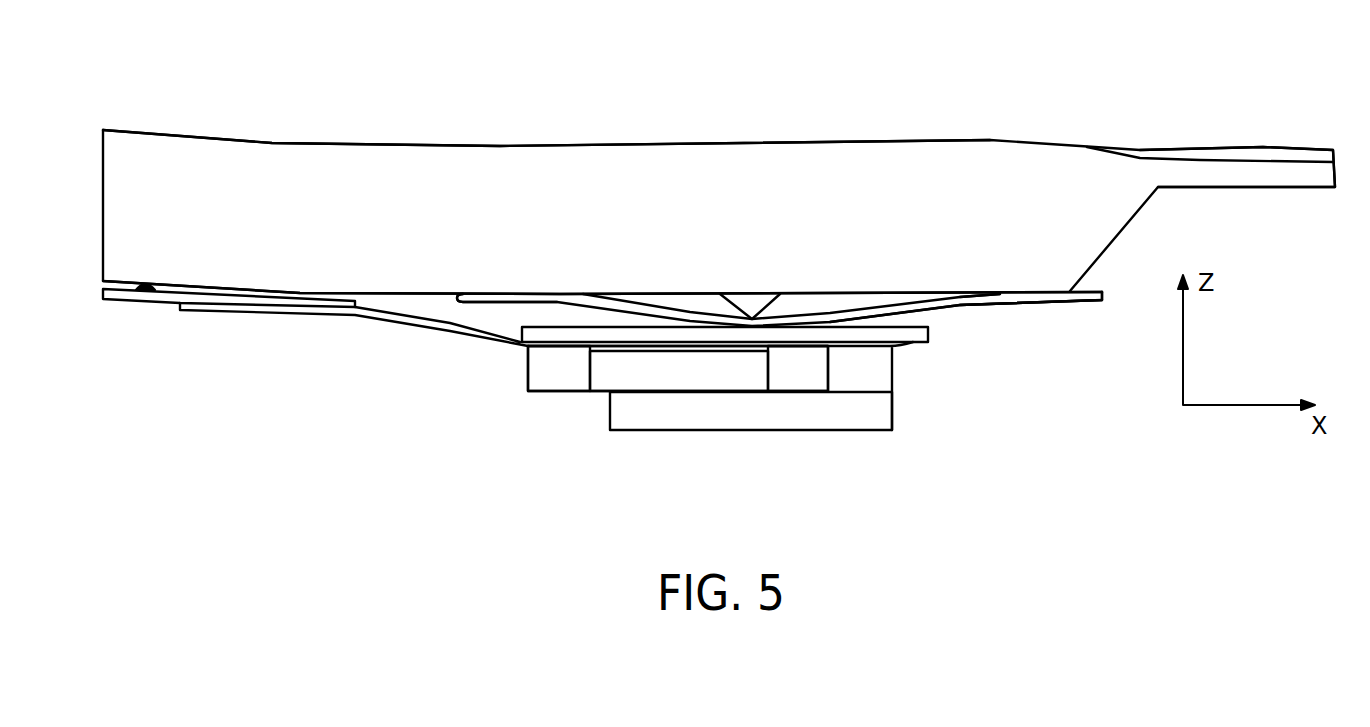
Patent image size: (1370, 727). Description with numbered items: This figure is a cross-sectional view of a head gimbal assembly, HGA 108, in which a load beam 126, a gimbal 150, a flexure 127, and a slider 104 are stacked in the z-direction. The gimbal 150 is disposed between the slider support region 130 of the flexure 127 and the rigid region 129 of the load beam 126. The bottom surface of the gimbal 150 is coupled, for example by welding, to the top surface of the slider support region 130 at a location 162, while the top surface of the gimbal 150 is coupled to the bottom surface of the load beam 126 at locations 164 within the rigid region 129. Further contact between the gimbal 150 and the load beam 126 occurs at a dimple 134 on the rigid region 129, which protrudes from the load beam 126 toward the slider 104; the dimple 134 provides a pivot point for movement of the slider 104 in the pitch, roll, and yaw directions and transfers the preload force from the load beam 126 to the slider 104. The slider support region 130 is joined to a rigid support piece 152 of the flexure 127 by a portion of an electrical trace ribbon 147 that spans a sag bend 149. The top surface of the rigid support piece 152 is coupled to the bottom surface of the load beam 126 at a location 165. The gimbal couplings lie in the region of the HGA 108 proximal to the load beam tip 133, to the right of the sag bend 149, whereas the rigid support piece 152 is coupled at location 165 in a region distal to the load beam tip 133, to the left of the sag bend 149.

The slider 104 is at (730, 407).
The HGA 108 is at (958, 66).
The load beam 126 is at (395, 106).
The flexure 127 is at (393, 457).
The rigid region 129 is at (628, 190).
The slider support region 130 is at (918, 343).
The load beam tip 133 is at (1255, 148).
The dimple 134 is at (752, 303).
The electrical trace ribbon 147 is at (502, 348).
The sag bend 149 is at (413, 354).
The gimbal 150 is at (958, 306).
The rigid support piece 152 is at (123, 302).
The location 162 is at (780, 323).
The locations 164 is at (520, 295).
The location 165 is at (143, 284).